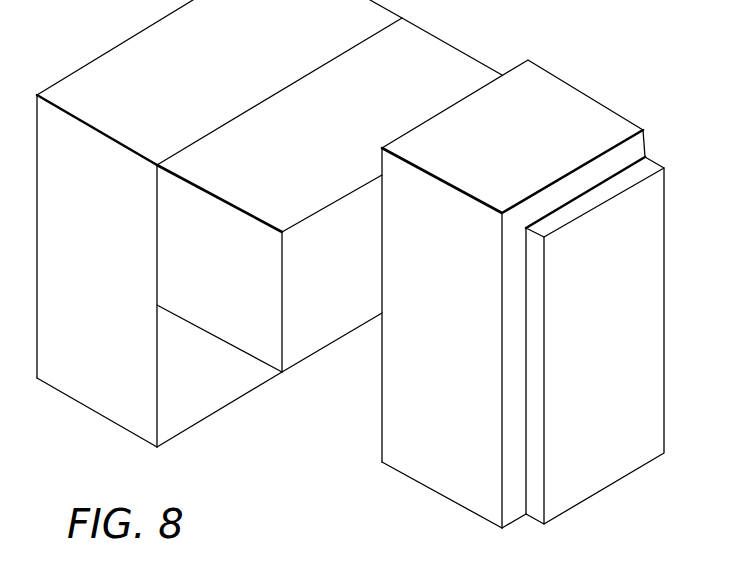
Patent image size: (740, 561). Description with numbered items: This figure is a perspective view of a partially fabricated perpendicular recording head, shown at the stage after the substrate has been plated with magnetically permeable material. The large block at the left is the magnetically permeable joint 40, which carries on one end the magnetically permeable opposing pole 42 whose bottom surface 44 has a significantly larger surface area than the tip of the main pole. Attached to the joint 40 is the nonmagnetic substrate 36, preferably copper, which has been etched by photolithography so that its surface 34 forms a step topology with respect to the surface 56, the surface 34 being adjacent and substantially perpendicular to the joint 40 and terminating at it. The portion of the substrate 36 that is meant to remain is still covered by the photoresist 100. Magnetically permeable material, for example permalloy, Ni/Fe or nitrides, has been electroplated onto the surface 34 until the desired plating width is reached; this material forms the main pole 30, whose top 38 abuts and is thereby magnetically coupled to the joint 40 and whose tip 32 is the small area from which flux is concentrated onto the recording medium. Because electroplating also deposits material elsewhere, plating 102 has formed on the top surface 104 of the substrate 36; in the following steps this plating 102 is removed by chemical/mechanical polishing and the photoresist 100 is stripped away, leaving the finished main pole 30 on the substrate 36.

The main pole 30 is at (428, 367).
The tip 32 is at (450, 502).
The surface 34 is at (528, 421).
The nonmagnetic substrate 36 is at (508, 120).
The top 38 is at (426, 254).
The joint 40 is at (276, 171).
The opposing pole 42 is at (79, 235).
The bottom surface 44 is at (107, 420).
The surface 56 is at (206, 278).
The photoresist 100 is at (585, 309).
The plating 102 is at (438, 161).
The top surface 104 is at (613, 178).